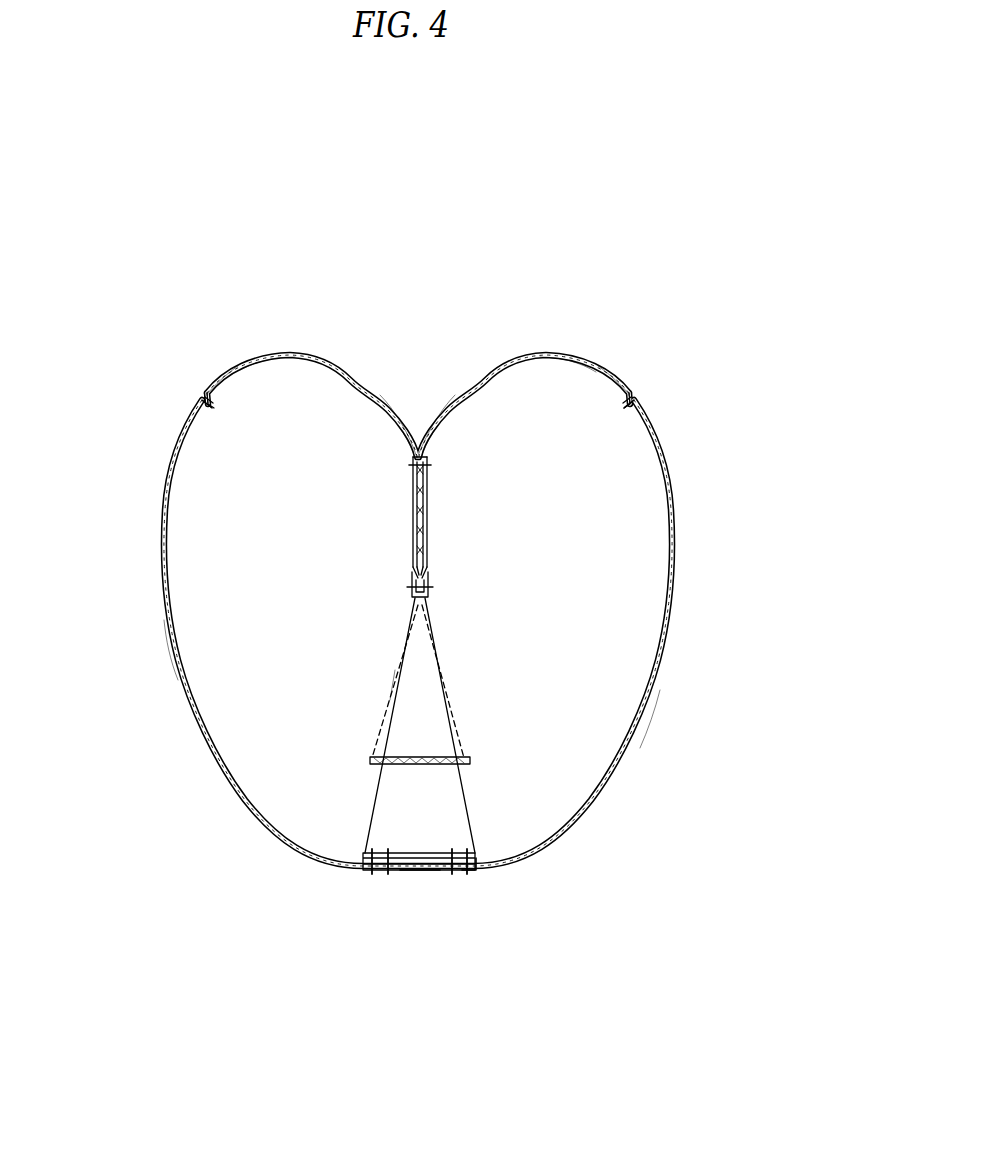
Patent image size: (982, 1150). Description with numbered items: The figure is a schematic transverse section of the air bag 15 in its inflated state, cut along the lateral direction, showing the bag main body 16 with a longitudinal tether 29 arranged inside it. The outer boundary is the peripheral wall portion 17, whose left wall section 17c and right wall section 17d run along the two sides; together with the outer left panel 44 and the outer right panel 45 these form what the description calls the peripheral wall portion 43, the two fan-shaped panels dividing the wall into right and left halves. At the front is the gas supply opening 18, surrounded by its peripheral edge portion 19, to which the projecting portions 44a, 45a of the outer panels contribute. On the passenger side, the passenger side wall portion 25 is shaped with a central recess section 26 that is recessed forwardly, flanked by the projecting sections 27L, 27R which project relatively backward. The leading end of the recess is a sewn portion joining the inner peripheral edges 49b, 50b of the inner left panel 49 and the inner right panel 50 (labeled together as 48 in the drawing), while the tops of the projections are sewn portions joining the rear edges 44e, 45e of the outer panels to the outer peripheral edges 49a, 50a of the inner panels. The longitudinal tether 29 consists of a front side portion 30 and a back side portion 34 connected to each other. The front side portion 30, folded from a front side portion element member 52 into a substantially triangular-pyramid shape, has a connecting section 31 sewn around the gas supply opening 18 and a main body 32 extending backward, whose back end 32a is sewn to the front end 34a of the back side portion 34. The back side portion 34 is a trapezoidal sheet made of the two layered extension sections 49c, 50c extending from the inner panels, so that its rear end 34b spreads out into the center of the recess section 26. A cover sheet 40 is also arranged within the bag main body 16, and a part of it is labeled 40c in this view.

The air bag 15 is at (659, 207).
The bag main body 16 is at (191, 285).
The peripheral wall portion 17 is at (619, 808).
The left wall section 17c is at (652, 712).
The right wall section 17d is at (178, 664).
The gas supply opening 18 is at (420, 872).
The peripheral edge portion 19 is at (474, 870).
The passenger side wall portion 25 is at (473, 360).
The recess section 26 is at (423, 421).
The projecting section 27L is at (618, 361).
The projecting section 27R is at (228, 357).
The longitudinal tether 29 is at (528, 512).
The front side portion 30 is at (466, 653).
The connecting section 31 is at (460, 855).
The main body 32 is at (440, 745).
The back end 32a is at (405, 590).
The back side portion 34 is at (441, 547).
The front end 34a is at (410, 580).
The rear end 34b is at (430, 470).
The cover sheet 40 is at (475, 718).
The tether end portion 40c is at (418, 758).
The peripheral wall portion 43 is at (434, 687).
The outer left panel 44 is at (651, 757).
The projecting portion 44a is at (460, 872).
The rear edge 44e is at (632, 410).
The outer right panel 45 is at (207, 772).
The projecting portion 45a is at (380, 872).
The rear edge 45e is at (210, 412).
The seam 48 is at (418, 401).
The inner left panel 49 is at (556, 342).
The outer peripheral edge 49a is at (625, 410).
The inner peripheral edge 49b is at (430, 455).
The extension section 49c is at (430, 505).
The inner right panel 50 is at (295, 341).
The outer peripheral edge 50a is at (215, 408).
The inner peripheral edge 50b is at (412, 455).
The extension section 50c is at (412, 520).
The front side portion element member 52 is at (380, 692).